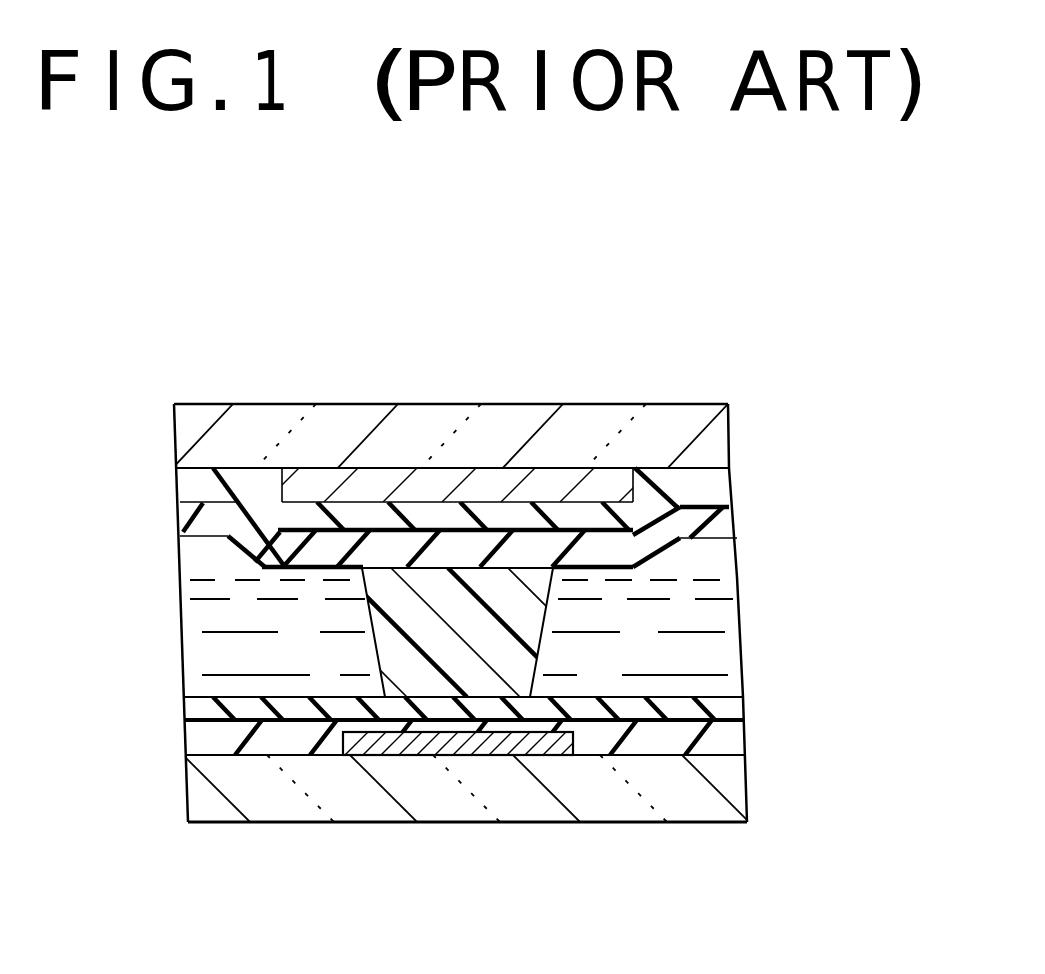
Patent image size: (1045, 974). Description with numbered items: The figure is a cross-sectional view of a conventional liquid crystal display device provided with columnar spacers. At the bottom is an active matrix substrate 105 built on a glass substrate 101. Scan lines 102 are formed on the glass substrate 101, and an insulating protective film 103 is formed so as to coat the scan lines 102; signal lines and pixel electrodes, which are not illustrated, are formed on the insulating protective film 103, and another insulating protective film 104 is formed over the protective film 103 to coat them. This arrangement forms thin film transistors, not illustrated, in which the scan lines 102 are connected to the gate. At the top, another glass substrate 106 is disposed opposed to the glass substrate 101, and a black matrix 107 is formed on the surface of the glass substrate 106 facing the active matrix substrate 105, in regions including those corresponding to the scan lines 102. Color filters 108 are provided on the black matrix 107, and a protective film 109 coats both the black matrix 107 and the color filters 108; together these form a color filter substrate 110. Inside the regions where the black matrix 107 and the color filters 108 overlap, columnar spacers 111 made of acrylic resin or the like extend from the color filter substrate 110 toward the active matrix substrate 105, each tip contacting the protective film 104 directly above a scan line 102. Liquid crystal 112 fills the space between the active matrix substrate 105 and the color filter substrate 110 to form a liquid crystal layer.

The glass substrate 101 is at (683, 795).
The scan lines 102 is at (563, 742).
The insulating protective film 103 is at (233, 740).
The insulating protective film 104 is at (235, 710).
The active matrix substrate 105 is at (763, 822).
The glass substrate 106 is at (678, 440).
The black matrix 107 is at (612, 487).
The color filters 108 is at (637, 518).
The protective film 109 is at (213, 520).
The color filter substrate 110 is at (738, 375).
The columnar spacers 111 is at (403, 613).
The liquid crystal 112 is at (698, 625).